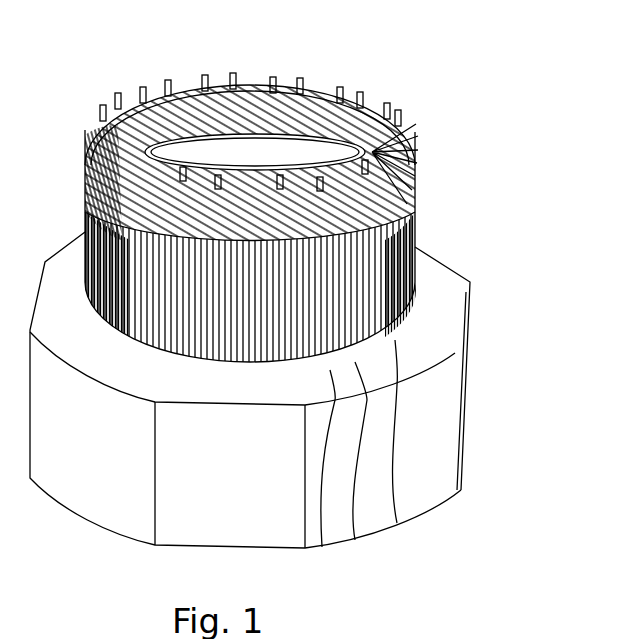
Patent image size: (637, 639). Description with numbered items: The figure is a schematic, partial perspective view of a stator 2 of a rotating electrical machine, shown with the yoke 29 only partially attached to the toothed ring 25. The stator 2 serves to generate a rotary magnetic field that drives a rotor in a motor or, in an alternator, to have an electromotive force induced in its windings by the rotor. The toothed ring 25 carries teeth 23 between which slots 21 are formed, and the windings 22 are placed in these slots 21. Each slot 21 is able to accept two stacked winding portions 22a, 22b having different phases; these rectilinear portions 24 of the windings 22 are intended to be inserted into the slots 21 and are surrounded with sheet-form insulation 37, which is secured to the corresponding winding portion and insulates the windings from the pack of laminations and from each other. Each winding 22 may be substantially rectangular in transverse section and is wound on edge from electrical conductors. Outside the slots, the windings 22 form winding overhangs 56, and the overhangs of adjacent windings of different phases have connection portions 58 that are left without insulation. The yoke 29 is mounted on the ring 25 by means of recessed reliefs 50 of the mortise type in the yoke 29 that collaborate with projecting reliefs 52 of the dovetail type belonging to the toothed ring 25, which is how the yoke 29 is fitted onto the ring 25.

The stator 2 is at (437, 118).
The slots 21 is at (408, 238).
The windings 22 is at (422, 142).
The winding portion 22a is at (283, 345).
The winding portion 22b is at (336, 133).
The teeth 23 is at (428, 207).
The rectilinear portions 24 is at (322, 547).
The toothed ring 25 is at (285, 78).
The yoke 29 is at (435, 327).
The sheet-form insulation 37 is at (406, 272).
The recessed reliefs 50 is at (397, 523).
The projecting reliefs 52 is at (355, 540).
The winding overhangs 56 is at (395, 110).
The connection portions 58 is at (362, 94).